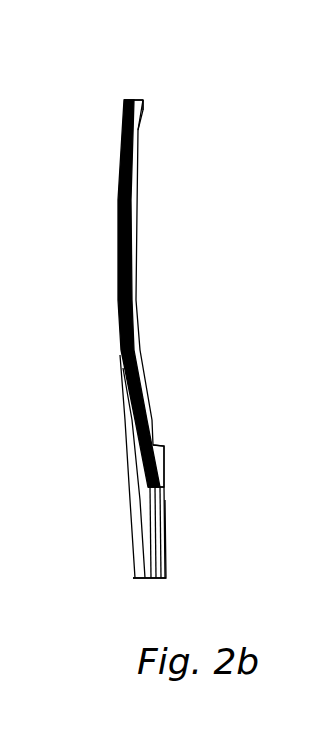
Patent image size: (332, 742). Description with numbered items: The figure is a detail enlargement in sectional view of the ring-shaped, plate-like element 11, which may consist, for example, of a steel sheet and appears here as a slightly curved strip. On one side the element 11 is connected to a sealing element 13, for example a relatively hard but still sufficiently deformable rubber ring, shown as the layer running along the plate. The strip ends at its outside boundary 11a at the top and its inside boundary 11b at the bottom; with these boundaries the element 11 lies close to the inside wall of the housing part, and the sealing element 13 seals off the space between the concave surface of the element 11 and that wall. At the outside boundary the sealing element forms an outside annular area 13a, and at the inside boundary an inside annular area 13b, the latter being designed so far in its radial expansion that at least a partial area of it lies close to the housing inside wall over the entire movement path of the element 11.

The ring-shaped, plate-like element 11 is at (148, 314).
The outside boundary 11a is at (149, 99).
The inside boundary 11b is at (166, 489).
The sealing element 13 is at (137, 266).
The outside annular area of the sealing element 13a is at (143, 103).
The inside annular area of the sealing element 13b is at (162, 484).